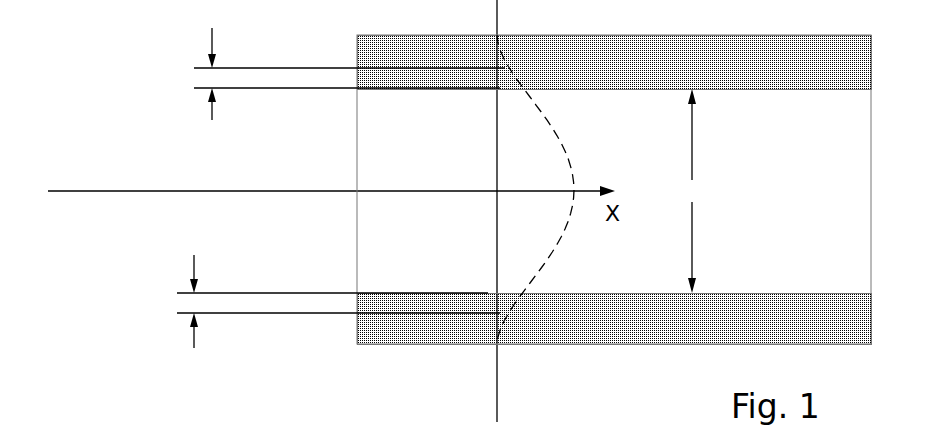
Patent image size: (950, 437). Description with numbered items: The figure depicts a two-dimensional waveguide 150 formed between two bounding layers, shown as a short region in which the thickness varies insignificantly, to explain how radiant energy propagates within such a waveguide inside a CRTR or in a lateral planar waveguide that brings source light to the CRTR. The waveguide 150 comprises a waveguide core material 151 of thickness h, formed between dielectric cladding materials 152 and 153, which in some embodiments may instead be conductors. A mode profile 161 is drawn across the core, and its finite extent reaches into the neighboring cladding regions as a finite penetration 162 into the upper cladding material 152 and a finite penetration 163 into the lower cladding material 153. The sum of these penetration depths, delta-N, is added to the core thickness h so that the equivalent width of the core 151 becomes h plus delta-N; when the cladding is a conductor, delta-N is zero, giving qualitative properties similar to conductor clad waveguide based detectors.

The waveguide 150 is at (608, 224).
The waveguide core material 151 is at (717, 191).
The dielectric cladding material 152 is at (614, 62).
The dielectric cladding material 153 is at (614, 318).
The mode profile 161 is at (558, 190).
The finite penetration 162 is at (313, 74).
The finite penetration 163 is at (302, 301).